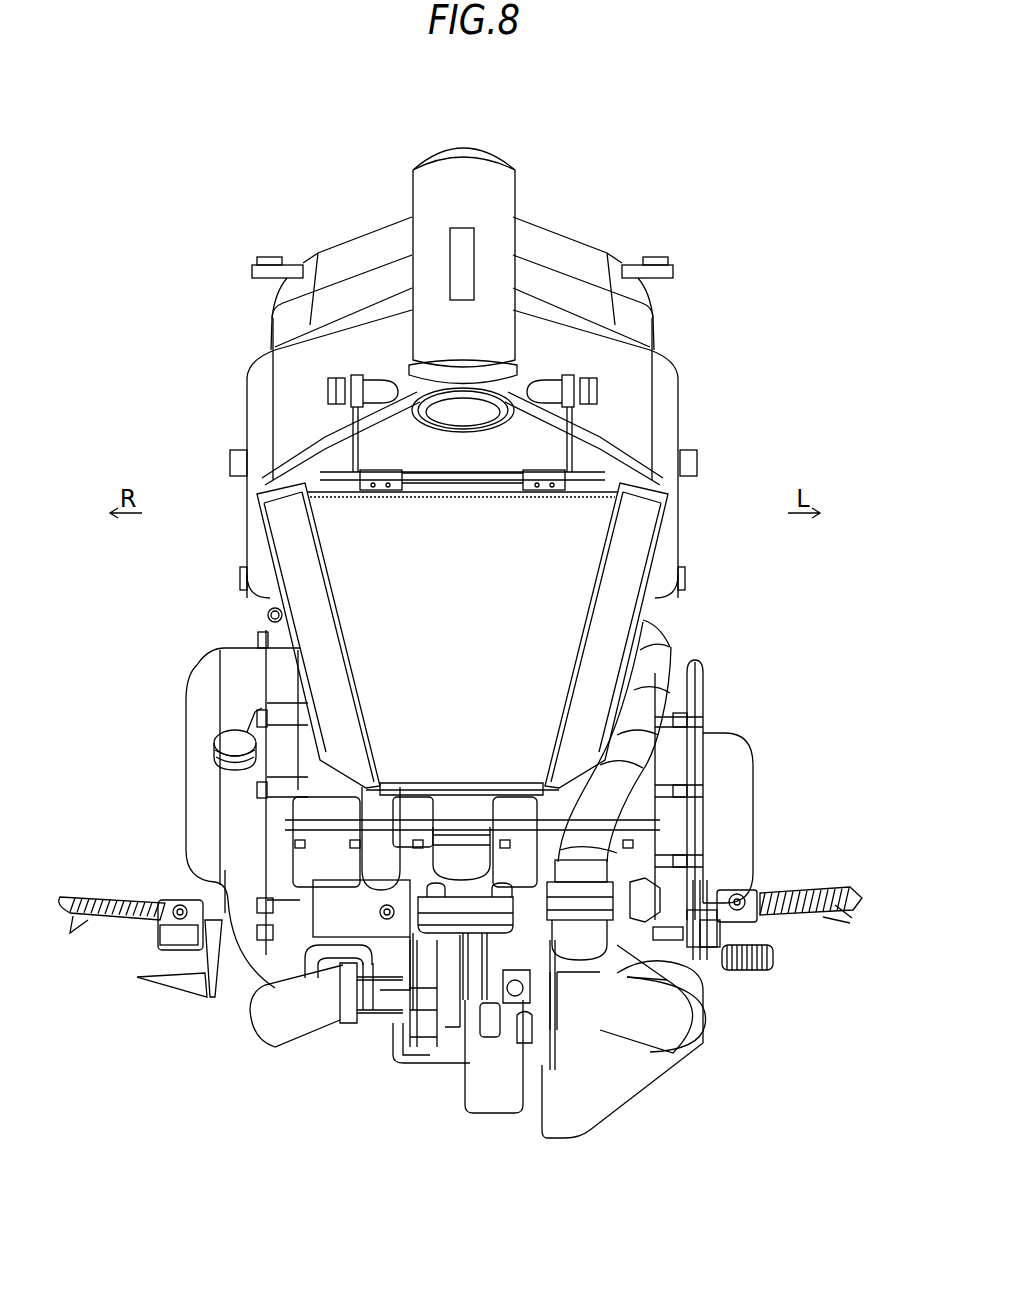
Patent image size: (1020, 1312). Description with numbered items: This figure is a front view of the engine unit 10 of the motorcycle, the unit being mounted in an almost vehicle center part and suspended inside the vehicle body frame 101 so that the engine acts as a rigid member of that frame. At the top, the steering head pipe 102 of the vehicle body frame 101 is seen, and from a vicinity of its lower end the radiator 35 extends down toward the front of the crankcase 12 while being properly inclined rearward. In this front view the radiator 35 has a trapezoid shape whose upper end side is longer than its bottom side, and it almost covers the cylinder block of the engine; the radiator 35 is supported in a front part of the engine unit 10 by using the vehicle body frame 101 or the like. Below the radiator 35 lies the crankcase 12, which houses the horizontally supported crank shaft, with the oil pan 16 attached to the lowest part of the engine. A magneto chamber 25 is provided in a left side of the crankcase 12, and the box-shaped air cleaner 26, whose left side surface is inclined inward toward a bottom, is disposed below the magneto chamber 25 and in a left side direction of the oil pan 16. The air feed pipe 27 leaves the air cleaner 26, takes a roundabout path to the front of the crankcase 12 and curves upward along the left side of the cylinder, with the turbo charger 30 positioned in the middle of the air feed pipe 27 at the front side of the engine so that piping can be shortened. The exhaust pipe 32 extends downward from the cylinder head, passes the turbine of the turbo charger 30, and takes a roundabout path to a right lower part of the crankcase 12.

The engine unit 10 is at (178, 664).
The crankcase 12 is at (340, 900).
The oil pan 16 is at (497, 1115).
The magneto chamber 25 is at (748, 773).
The air cleaner 26 is at (643, 1120).
The air feed pipe 27 is at (652, 675).
The turbo charger 30 is at (495, 978).
The exhaust pipe 32 is at (457, 863).
The radiator 35 is at (365, 590).
The vehicle body frame 101 is at (578, 350).
The steering head pipe 102 is at (447, 199).